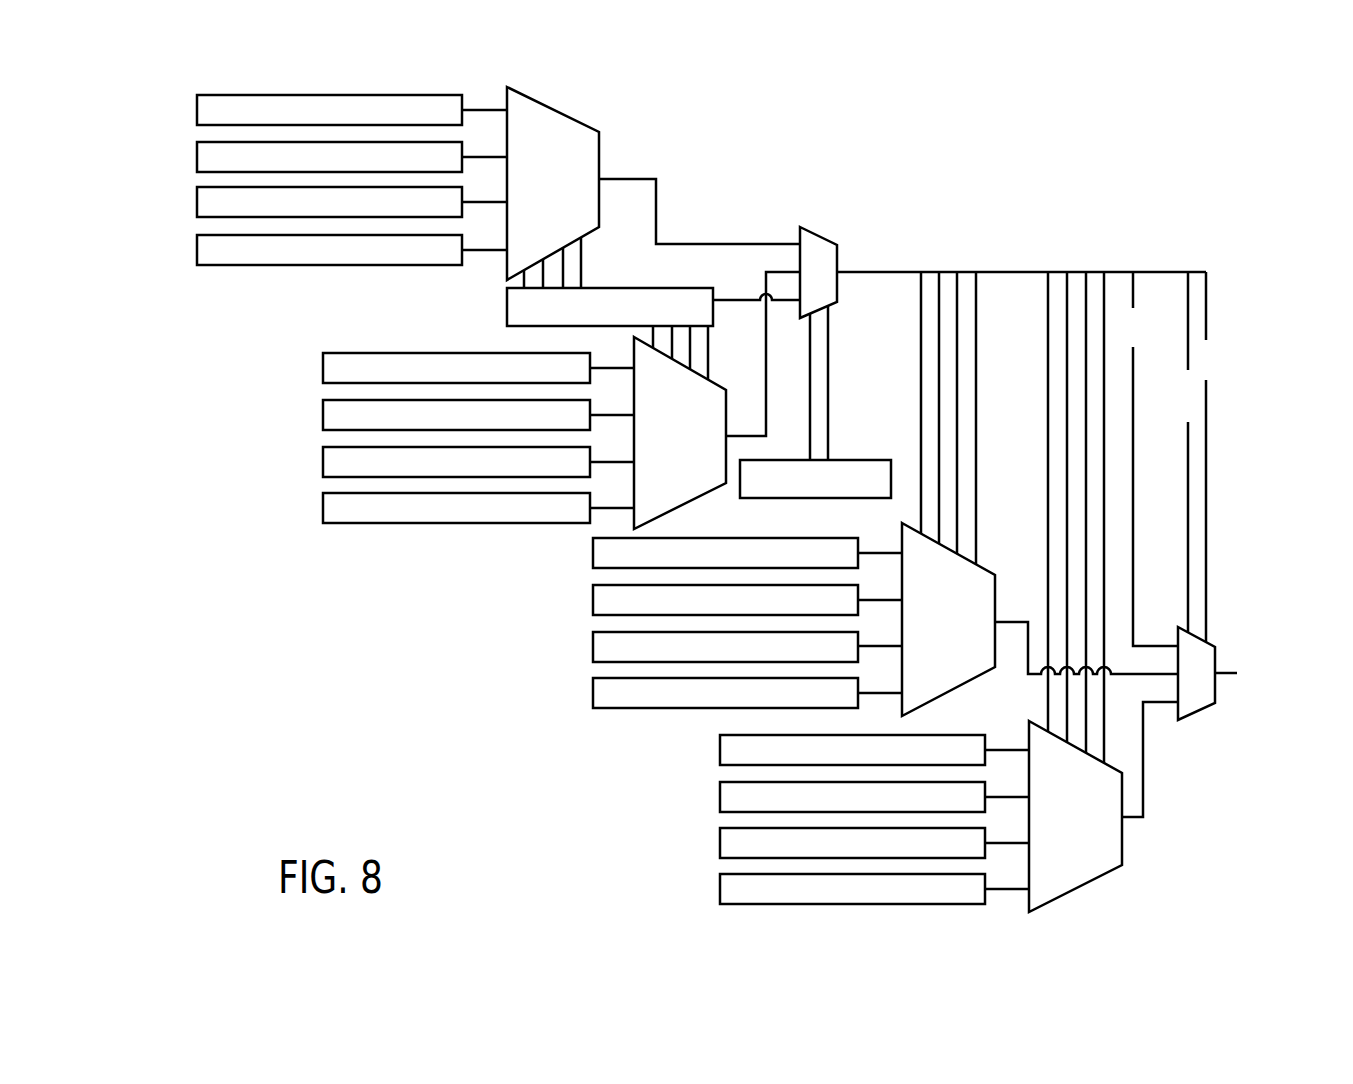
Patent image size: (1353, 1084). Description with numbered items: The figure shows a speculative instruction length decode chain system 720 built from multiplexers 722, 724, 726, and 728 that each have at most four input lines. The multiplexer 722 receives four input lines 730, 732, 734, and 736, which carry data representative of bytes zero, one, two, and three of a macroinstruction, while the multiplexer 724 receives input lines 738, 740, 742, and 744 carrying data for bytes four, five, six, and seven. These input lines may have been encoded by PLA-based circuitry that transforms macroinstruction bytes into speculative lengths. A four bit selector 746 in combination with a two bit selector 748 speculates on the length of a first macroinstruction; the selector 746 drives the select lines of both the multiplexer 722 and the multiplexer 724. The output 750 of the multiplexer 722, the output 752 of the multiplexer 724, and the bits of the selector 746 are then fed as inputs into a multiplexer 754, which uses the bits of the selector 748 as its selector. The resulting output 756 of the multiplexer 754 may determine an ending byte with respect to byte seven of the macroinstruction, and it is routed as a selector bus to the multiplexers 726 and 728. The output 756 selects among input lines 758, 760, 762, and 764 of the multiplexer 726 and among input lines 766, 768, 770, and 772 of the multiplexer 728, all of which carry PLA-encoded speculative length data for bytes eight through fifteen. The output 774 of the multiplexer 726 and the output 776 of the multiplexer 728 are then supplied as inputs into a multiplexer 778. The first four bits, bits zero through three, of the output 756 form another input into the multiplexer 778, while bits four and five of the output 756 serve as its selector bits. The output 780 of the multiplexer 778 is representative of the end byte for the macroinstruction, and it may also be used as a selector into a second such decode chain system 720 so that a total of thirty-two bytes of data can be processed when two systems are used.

The speculative instruction length decode chain system 720 is at (1045, 202).
The multiplexer 722 is at (562, 113).
The multiplexer 724 is at (680, 510).
The multiplexer 726 is at (940, 697).
The multiplexer 728 is at (1095, 880).
The input line 730 is at (193, 108).
The input line 732 is at (193, 155).
The input line 734 is at (193, 200).
The input line 736 is at (193, 247).
The input line 738 is at (319, 366).
The input line 740 is at (319, 413).
The input line 742 is at (319, 460).
The input line 744 is at (319, 506).
The four bit selector 746 is at (617, 288).
The two bit selector 748 is at (858, 460).
The output 750 is at (730, 243).
The output 752 is at (763, 385).
The multiplexer 754 is at (822, 237).
The output 756 is at (880, 272).
The input line 758 is at (589, 551).
The input line 760 is at (589, 598).
The input line 762 is at (589, 645).
The input line 764 is at (589, 691).
The input line 766 is at (716, 748).
The input line 768 is at (716, 795).
The input line 770 is at (716, 841).
The input line 772 is at (716, 887).
The output 774 is at (1013, 620).
The output 776 is at (1146, 768).
The multiplexer 778 is at (1218, 656).
The output 780 is at (1225, 676).